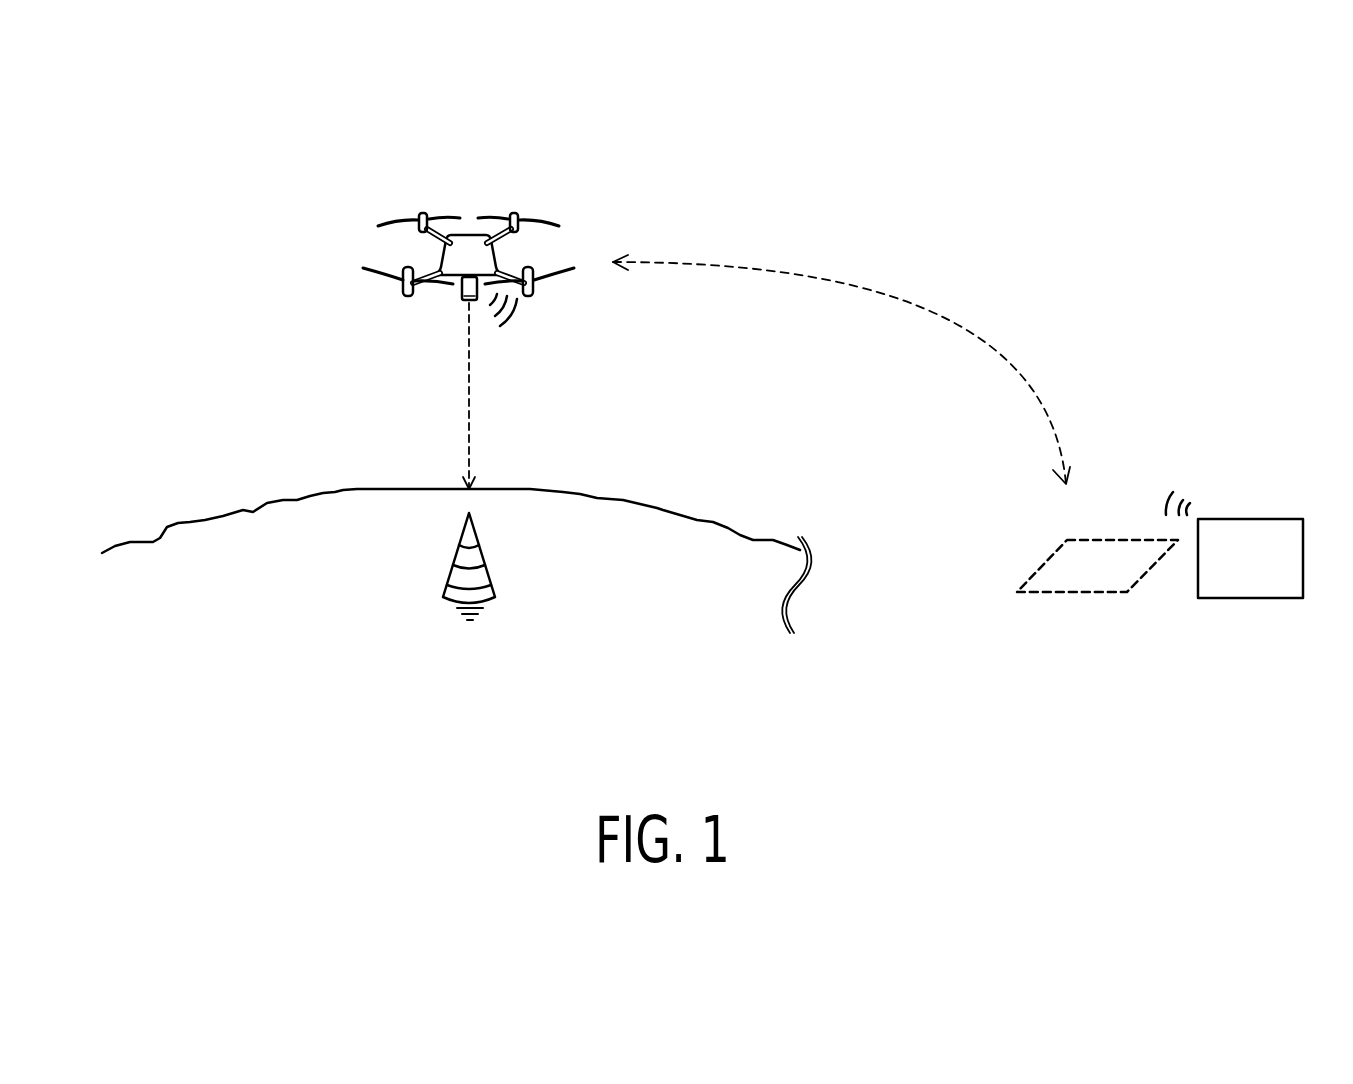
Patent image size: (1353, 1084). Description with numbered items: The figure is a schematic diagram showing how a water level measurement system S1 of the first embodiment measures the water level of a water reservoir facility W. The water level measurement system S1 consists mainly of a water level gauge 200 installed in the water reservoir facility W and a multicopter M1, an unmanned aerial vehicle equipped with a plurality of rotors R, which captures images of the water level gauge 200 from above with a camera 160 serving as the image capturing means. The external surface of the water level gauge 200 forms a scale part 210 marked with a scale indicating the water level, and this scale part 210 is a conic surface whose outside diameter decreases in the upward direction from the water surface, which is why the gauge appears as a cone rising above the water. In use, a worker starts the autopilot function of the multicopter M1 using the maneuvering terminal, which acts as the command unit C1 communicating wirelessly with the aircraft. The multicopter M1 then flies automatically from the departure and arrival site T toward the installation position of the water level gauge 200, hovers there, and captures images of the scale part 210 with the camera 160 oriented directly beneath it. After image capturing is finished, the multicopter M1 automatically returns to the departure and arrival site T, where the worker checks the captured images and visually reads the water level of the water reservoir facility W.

The water level measurement system S1 is at (242, 163).
The multicopter M1 is at (487, 271).
The camera 160 is at (461, 286).
The rotor R is at (563, 270).
The water level gauge 200 is at (418, 557).
The scale part 210 is at (469, 566).
The water reservoir facility W is at (456, 544).
The departure and arrival site T is at (1097, 551).
The command unit C1 is at (1234, 544).